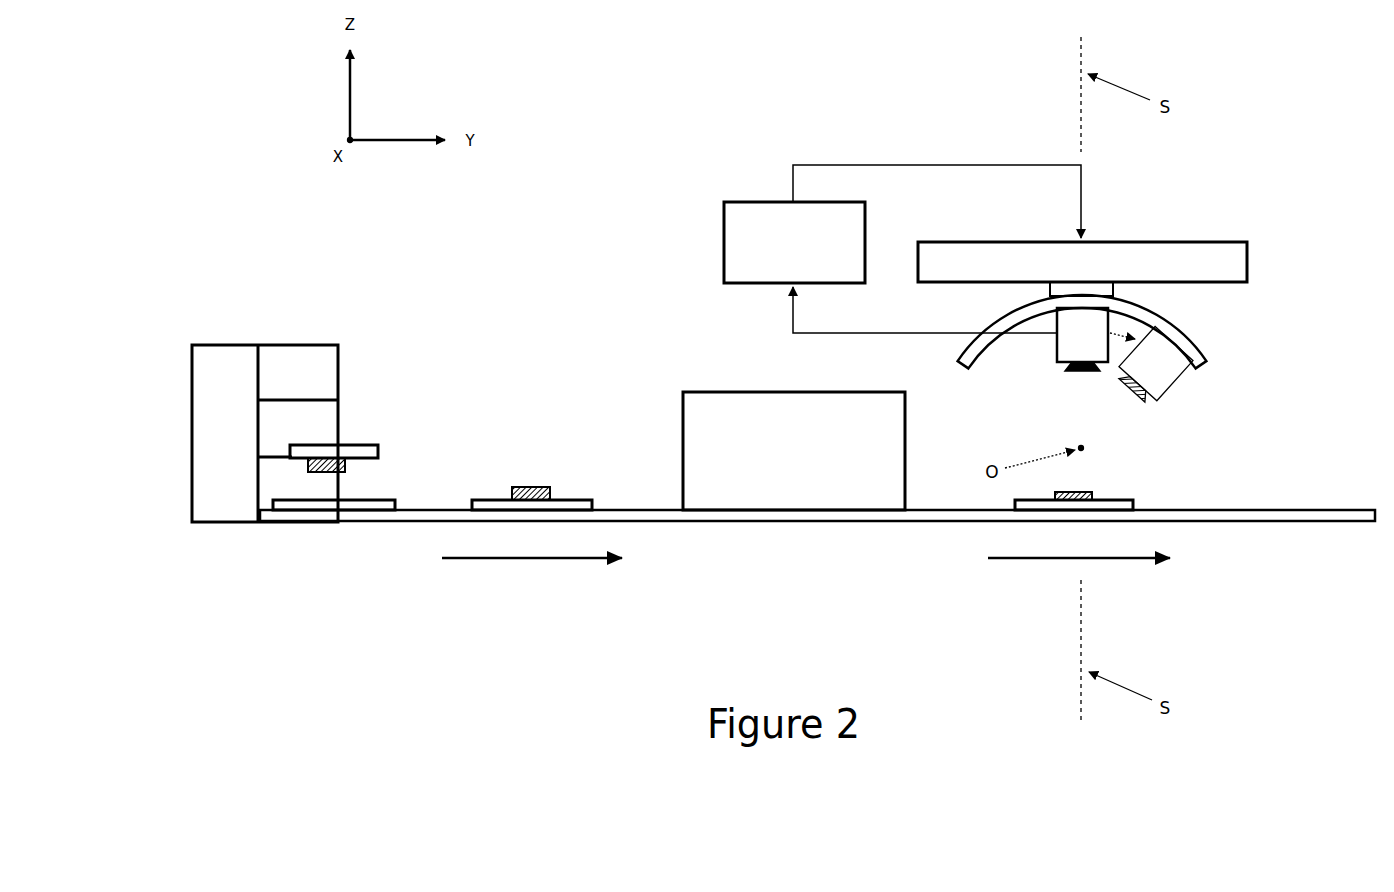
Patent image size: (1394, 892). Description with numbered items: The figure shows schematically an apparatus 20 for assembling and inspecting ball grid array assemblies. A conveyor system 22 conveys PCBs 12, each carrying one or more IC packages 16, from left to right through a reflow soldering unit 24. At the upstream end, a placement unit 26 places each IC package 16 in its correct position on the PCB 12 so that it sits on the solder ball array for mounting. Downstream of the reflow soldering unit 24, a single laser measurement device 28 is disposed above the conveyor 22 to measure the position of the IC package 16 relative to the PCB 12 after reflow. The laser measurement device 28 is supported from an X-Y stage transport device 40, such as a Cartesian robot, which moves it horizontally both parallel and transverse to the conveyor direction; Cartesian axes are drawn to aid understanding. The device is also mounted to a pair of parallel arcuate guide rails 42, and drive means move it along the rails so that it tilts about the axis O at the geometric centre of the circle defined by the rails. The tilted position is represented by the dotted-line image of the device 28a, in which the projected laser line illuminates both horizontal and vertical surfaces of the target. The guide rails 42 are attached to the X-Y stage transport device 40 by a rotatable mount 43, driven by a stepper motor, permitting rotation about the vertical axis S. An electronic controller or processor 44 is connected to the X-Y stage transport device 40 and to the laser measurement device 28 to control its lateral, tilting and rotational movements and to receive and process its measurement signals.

The PCB 12 is at (294, 514).
The IC package 16 is at (335, 476).
The apparatus 20 is at (488, 334).
The conveyor system 22 is at (1281, 526).
The reflow soldering unit 24 is at (794, 451).
The placement unit 26 is at (229, 364).
The laser measurement device 28 is at (1052, 350).
The laser measurement device in tilted position 28a is at (1183, 378).
The X-Y stage transport device 40 is at (1082, 262).
The arcuate guide rails 42 is at (1166, 312).
The rotatable mount 43 is at (1100, 290).
The processor 44 is at (902, 249).